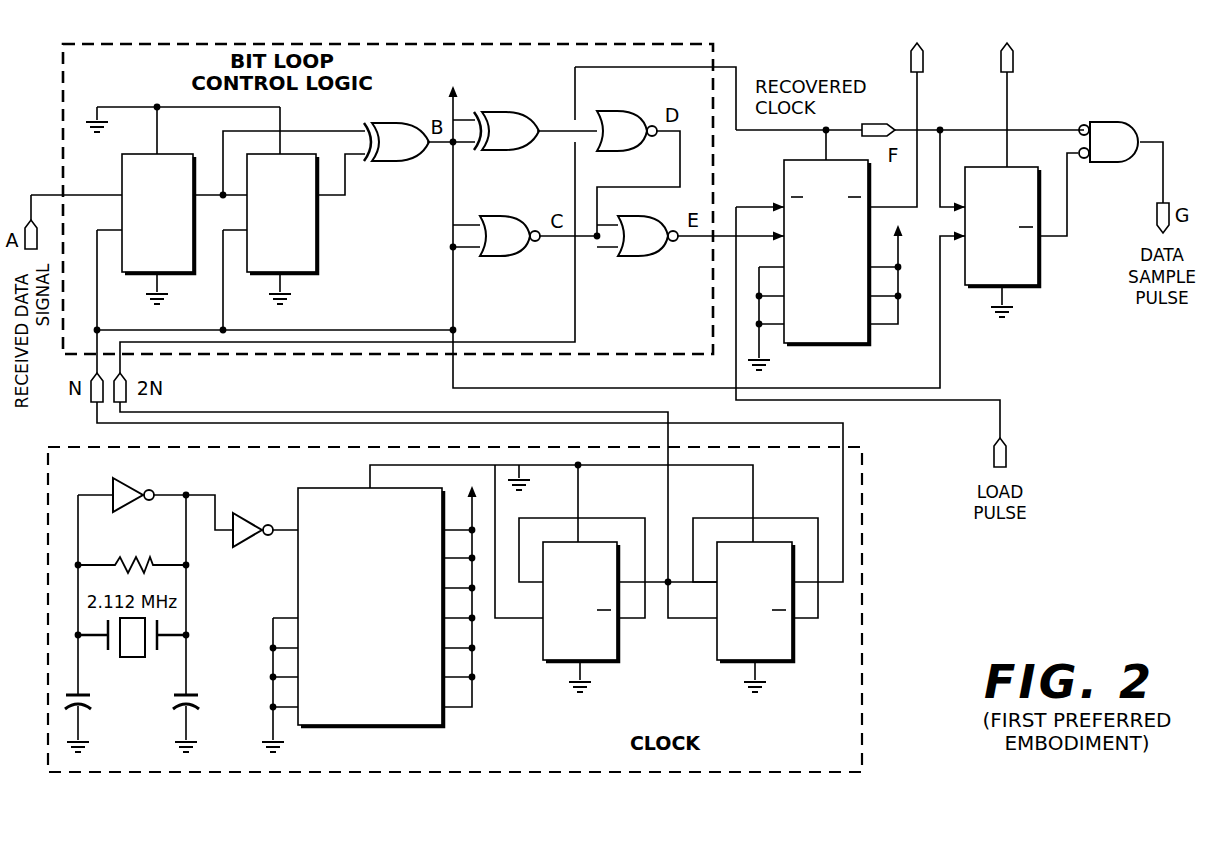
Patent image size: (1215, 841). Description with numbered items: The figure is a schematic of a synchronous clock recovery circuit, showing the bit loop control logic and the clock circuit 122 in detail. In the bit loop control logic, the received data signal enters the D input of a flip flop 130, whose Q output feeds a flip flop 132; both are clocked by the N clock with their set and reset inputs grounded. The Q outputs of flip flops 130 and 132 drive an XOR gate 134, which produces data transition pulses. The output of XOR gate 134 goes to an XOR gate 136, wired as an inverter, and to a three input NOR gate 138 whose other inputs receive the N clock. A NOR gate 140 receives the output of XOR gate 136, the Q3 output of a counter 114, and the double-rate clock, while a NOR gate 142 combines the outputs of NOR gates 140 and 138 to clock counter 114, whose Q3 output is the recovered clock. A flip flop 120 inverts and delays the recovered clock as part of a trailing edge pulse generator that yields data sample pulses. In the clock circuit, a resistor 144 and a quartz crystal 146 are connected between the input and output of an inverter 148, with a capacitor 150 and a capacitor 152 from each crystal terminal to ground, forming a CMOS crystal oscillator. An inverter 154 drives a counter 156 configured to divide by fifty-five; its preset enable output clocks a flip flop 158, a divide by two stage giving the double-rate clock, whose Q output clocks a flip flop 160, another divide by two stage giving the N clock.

The counter 114 is at (850, 345).
The flip flop 120 is at (1038, 272).
The clock circuit 122 is at (1115, 124).
The flip flop 130 is at (122, 180).
The flip flop 132 is at (316, 250).
The XOR gate 134 is at (390, 162).
The XOR gate 136 is at (497, 152).
The NOR gate 138 is at (497, 258).
The NOR gate 140 is at (620, 112).
The NOR gate 142 is at (640, 258).
The resistor 144 is at (148, 557).
The quartz crystal 146 is at (165, 623).
The inverter 148 is at (130, 486).
The capacitor 150 is at (105, 703).
The capacitor 152 is at (212, 703).
The inverter 154 is at (250, 516).
The counter 156 is at (410, 727).
The flip flop 158 is at (617, 650).
The flip flop 160 is at (792, 650).